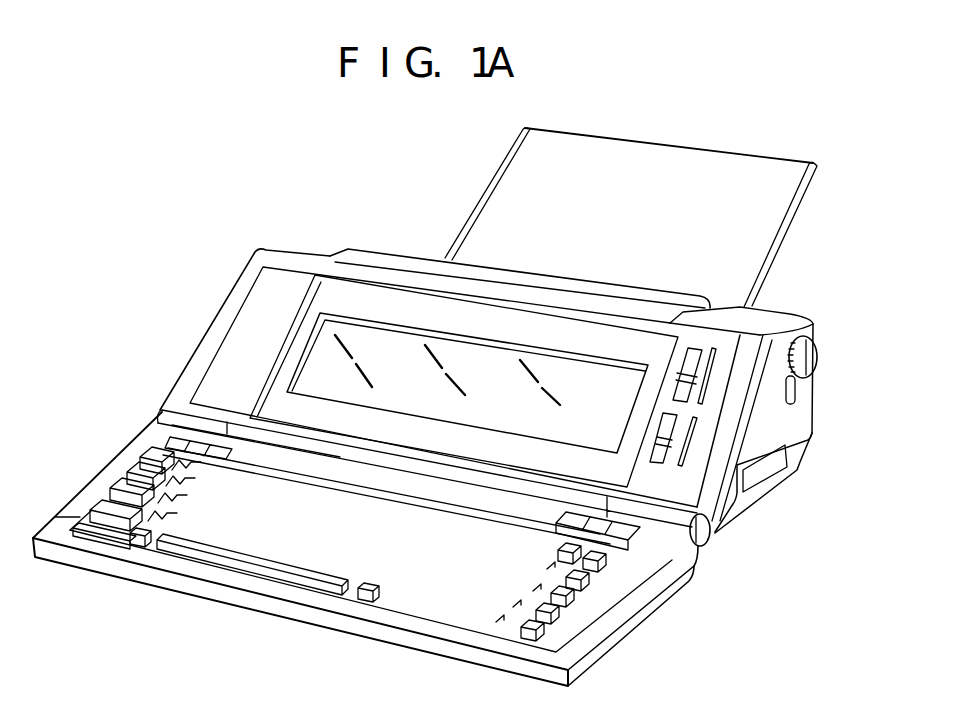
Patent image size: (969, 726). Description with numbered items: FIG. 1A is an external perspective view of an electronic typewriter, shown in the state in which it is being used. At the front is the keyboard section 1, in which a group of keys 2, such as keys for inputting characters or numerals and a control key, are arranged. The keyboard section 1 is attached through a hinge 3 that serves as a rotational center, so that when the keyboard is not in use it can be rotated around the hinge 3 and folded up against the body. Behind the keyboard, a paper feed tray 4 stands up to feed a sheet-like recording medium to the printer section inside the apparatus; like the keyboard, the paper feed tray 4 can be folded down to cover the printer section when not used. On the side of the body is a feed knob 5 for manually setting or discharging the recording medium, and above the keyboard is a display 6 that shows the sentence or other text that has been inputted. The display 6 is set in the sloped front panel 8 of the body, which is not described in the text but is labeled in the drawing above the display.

The keyboard section 1 is at (607, 612).
The group of keys 2 is at (133, 475).
The hinge 3 is at (708, 538).
The paper feed tray 4 is at (737, 273).
The feed knob 5 is at (813, 360).
The display 6 is at (320, 362).
The display cover 8 is at (385, 262).